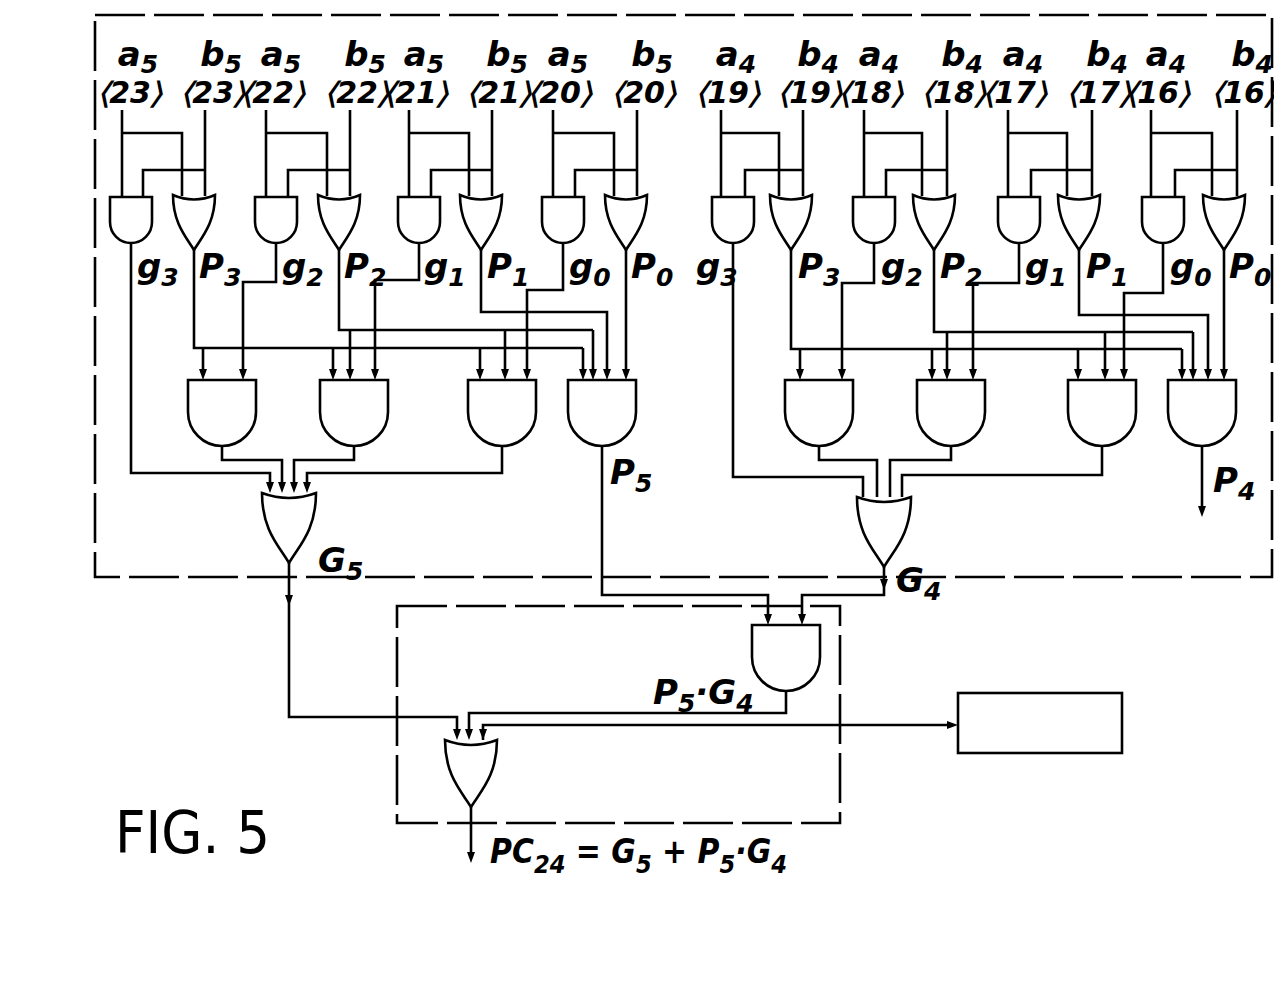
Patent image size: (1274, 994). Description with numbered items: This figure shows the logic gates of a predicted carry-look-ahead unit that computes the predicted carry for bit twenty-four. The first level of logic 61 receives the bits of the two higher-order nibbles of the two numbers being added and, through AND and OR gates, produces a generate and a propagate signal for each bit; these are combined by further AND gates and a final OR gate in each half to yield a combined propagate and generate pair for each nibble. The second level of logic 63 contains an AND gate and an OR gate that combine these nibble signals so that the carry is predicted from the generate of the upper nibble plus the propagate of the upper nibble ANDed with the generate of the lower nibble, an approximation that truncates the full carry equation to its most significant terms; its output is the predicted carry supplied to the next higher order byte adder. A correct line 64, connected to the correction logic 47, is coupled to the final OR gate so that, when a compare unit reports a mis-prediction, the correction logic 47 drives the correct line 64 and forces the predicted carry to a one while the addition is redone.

The first level of logic 61 is at (190, 577).
The second level of logic 63 is at (395, 732).
The correct line 64 is at (867, 725).
The correction logic 47 is at (1133, 712).